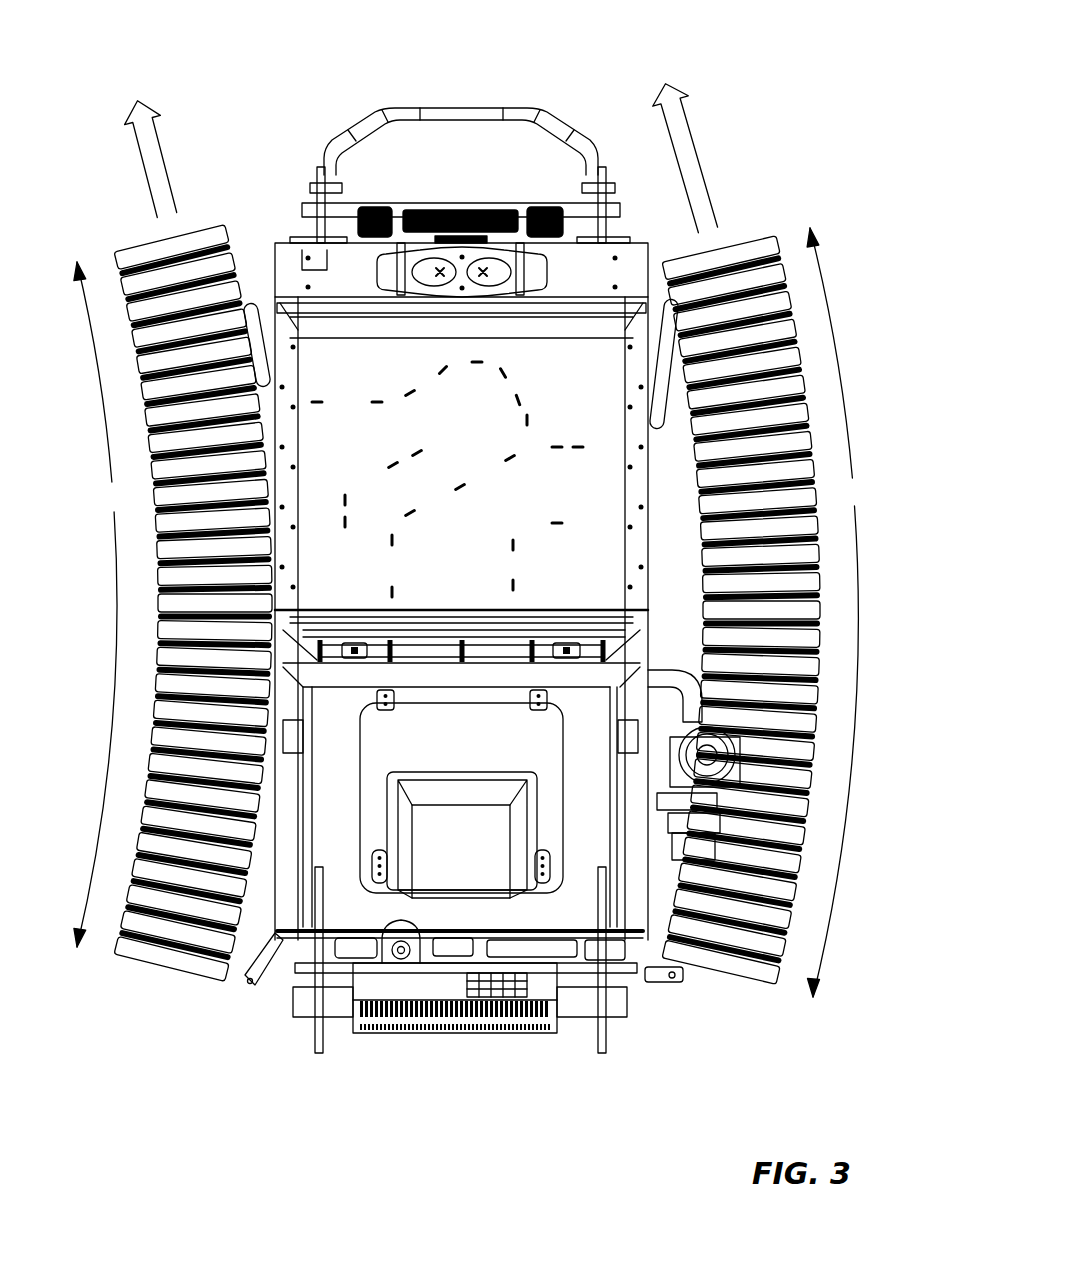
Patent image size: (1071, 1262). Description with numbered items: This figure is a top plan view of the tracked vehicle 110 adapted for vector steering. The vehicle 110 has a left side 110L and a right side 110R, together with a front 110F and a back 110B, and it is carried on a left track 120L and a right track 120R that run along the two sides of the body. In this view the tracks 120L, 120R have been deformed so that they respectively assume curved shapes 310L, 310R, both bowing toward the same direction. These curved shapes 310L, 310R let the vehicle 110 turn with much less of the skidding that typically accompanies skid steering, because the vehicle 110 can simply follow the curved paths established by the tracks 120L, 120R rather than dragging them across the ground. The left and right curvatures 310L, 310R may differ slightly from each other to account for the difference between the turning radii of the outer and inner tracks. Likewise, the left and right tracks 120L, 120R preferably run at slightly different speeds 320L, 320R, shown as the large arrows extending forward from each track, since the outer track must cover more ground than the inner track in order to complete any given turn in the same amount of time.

The vehicle 110 is at (855, 72).
The front 110F is at (488, 91).
The back 110B is at (489, 1082).
The left side 110L is at (100, 651).
The right side 110R is at (945, 651).
The left track 120L is at (125, 420).
The right track 120R is at (826, 421).
The curved shape 310L is at (105, 604).
The curved shape 310R is at (849, 612).
The speed 320L is at (151, 160).
The speed 320R is at (694, 170).